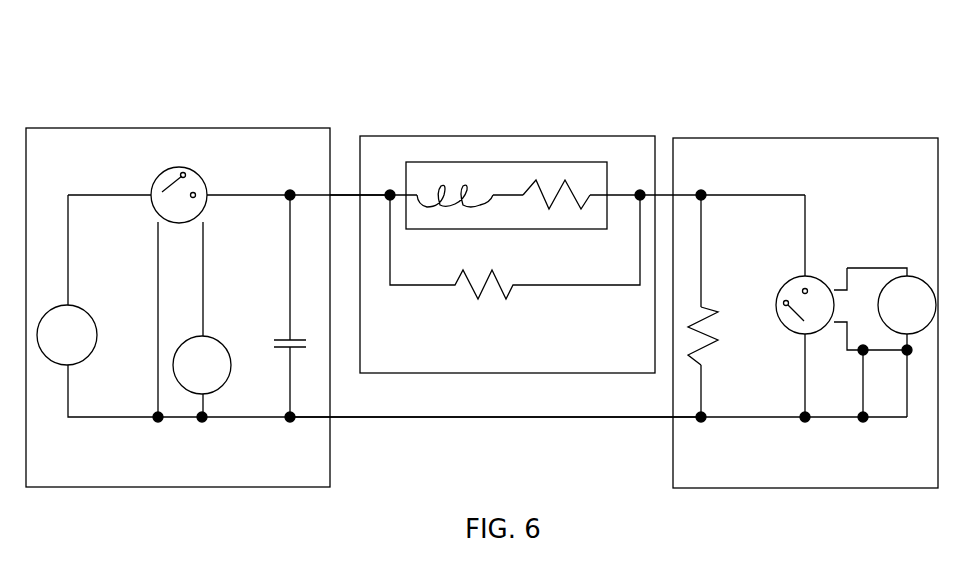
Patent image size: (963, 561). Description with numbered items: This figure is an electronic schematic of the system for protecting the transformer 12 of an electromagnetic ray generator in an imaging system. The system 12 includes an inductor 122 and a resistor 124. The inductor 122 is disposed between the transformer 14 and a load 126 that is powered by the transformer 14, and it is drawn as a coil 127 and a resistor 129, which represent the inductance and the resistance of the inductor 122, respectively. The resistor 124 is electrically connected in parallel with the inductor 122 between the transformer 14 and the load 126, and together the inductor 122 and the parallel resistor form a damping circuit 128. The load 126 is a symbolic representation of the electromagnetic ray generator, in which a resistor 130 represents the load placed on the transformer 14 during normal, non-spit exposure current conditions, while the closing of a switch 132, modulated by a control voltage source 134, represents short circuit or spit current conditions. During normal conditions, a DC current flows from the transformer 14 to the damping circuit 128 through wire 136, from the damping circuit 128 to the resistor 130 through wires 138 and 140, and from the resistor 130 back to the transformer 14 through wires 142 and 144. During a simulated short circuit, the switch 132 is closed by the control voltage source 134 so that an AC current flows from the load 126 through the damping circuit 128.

The system for protecting the transformer 12 is at (376, 58).
The transformer 14 is at (178, 128).
The inductor 122 is at (505, 162).
The resistor 124 is at (465, 292).
The load 126 is at (805, 138).
The coil 127 is at (433, 208).
The damping circuit 128 is at (556, 136).
The resistor 129 is at (557, 203).
The resistor 130 is at (710, 313).
The switch 132 is at (816, 277).
The control voltage source 134 is at (918, 276).
The wire 136 is at (346, 190).
The wire 138 is at (662, 193).
The wire 140 is at (703, 250).
The wire 142 is at (704, 392).
The wire 144 is at (486, 416).